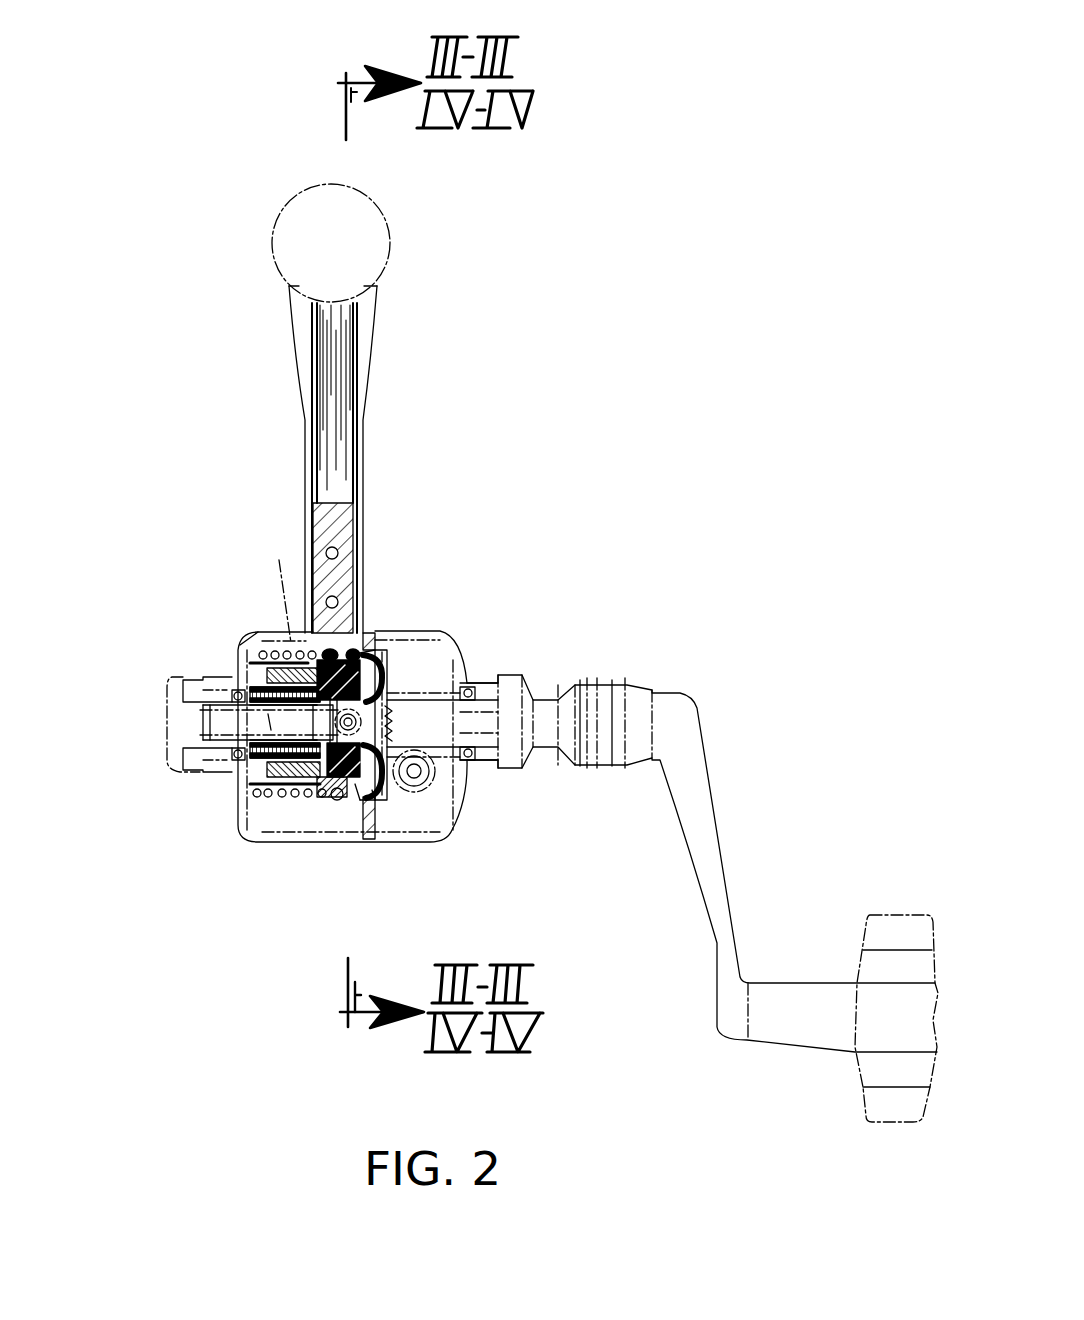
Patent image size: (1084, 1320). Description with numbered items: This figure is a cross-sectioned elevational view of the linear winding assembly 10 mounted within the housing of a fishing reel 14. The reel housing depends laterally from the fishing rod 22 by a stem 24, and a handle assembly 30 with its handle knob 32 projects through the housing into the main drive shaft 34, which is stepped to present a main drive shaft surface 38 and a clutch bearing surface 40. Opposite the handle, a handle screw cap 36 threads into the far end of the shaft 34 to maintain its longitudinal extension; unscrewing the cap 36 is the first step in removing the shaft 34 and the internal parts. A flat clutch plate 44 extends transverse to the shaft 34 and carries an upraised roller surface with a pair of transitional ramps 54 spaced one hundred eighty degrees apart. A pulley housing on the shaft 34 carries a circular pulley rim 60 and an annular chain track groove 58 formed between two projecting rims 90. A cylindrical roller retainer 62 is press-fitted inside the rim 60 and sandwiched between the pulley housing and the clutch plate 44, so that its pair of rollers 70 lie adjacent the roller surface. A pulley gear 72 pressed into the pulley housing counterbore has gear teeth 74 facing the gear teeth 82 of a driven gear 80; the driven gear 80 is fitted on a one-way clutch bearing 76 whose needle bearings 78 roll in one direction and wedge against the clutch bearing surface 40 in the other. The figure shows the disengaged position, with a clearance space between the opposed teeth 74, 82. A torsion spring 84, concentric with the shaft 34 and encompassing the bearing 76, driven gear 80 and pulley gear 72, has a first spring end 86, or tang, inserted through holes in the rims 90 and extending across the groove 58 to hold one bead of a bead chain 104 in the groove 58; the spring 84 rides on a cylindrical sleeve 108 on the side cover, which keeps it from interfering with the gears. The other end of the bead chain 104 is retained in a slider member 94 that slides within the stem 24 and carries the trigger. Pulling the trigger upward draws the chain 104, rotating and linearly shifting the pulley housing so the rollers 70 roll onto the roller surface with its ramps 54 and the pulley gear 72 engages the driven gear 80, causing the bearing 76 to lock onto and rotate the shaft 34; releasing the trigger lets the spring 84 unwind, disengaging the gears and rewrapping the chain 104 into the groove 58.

The linear winding assembly 10 is at (278, 898).
The fishing reel 14 is at (484, 808).
The fishing rod 22 is at (383, 217).
The stem 24 is at (305, 438).
The handle assembly 30 is at (693, 699).
The handle knob 32 is at (916, 915).
The main drive shaft 34 is at (220, 702).
The handle screw cap 36 is at (167, 762).
The main drive shaft surface 38 is at (290, 714).
The clutch bearing surface 40 is at (214, 723).
The clutch plate 44 is at (369, 640).
The transitional ramps 54 is at (441, 725).
The chain track groove 58 is at (344, 797).
The pulley rim 60 is at (374, 806).
The roller retainer 62 is at (383, 677).
The rollers 70 is at (376, 700).
The pulley gear 72 is at (270, 723).
The gear teeth 74 is at (300, 797).
The clutch bearing 76 is at (268, 670).
The needle bearings 78 is at (252, 690).
The driven gear 80 is at (257, 775).
The gear teeth 82 is at (300, 797).
The torsion spring 84 is at (258, 632).
The first spring end 86 is at (360, 648).
The annular projecting rims 90 is at (322, 797).
The slider member 94 is at (345, 515).
The bead chain 104 is at (366, 806).
The cylindrical sleeve 108 is at (285, 652).